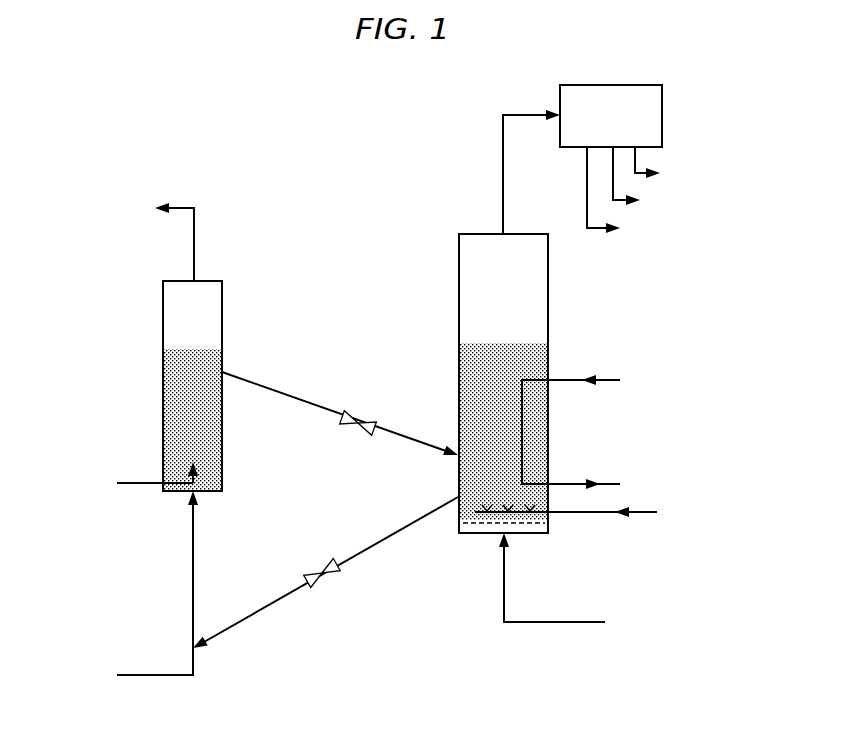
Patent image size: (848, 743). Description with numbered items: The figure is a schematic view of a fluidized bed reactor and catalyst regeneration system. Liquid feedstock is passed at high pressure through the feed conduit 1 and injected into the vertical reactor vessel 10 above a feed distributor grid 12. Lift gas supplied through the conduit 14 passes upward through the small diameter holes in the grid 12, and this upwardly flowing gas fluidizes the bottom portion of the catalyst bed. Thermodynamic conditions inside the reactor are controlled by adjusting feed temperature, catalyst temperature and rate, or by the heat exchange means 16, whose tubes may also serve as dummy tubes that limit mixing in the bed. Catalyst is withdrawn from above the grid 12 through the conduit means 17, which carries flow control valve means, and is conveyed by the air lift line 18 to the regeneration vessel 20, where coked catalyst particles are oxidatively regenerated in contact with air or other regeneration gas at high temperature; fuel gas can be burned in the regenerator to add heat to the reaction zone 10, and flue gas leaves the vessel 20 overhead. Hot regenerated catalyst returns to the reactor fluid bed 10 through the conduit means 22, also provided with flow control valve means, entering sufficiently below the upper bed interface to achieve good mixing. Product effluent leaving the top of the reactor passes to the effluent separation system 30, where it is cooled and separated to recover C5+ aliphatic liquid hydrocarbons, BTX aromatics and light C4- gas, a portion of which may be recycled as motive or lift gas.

The feed conduit 1 is at (640, 516).
The vertical reactor vessel 10 is at (459, 280).
The feed distributor grid 12 is at (487, 527).
The lift gas conduit 14 is at (553, 621).
The heat exchange means 16 is at (564, 380).
The catalyst withdrawal conduit means 17 is at (383, 540).
The air lift line 18 is at (196, 527).
The catalyst regeneration vessel 20 is at (174, 375).
The regenerated catalyst return conduit means 22 is at (300, 397).
The effluent separation system 30 is at (612, 85).